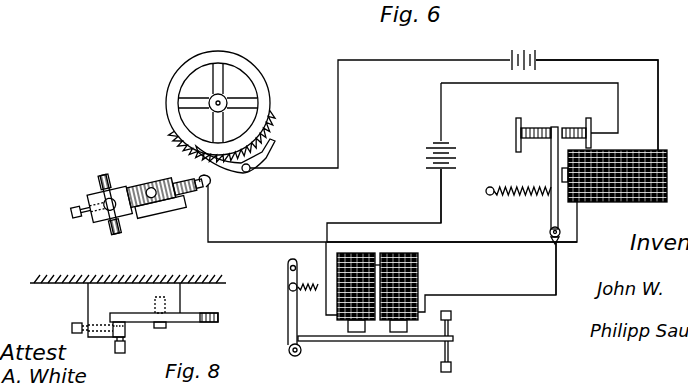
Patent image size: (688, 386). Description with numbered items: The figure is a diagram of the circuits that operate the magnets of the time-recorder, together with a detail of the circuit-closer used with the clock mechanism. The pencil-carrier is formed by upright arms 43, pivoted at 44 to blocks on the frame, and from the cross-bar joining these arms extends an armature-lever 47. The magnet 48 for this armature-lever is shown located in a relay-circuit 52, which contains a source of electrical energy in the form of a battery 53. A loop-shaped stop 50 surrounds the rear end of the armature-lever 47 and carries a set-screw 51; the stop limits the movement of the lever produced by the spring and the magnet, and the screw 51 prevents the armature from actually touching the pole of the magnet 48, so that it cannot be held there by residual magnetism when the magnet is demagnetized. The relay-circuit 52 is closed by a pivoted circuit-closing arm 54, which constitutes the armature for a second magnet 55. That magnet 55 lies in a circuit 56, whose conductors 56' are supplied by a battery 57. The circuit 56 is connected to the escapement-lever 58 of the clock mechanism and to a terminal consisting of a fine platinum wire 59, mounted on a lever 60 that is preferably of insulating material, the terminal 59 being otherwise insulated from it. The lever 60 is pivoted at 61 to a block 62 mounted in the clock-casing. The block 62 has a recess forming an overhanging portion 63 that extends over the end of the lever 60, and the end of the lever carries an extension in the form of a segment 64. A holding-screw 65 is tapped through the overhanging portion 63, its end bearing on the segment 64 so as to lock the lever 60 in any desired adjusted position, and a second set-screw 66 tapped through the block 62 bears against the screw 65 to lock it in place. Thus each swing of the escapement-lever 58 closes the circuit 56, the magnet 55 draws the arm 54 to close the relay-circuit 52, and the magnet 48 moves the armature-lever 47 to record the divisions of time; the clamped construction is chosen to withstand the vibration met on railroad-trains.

In FIG. 6, the upright arms 43 is at (288, 302).
In FIG. 6, the pivot 44 is at (299, 355).
In FIG. 6, the armature-lever 47 is at (390, 341).
In FIG. 6, the magnet 48 is at (418, 278).
In FIG. 6, the stop 50 is at (451, 362).
In FIG. 6, the set-screw 51 is at (451, 318).
In FIG. 6, the relay-circuit 52 is at (441, 213).
In FIG. 6, the battery 53 is at (451, 155).
In FIG. 6, the circuit-closing arm 54 is at (551, 160).
In FIG. 6, the magnet 55 is at (645, 204).
In FIG. 6, the circuit 56 is at (608, 105).
In FIG. 6, the circuit 56' is at (452, 251).
In FIG. 6, the battery 57 is at (537, 55).
In FIG. 6, the escapement-lever 58 is at (270, 152).
In FIG. 6, the platinum wire 59 is at (210, 183).
In FIG. 8, the platinum wire 59 is at (218, 315).
In FIG. 6, the lever 60 is at (180, 173).
In FIG. 8, the lever 60 is at (192, 322).
In FIG. 6, the pivot 61 is at (165, 219).
In FIG. 8, the pivot 61 is at (162, 328).
In FIG. 6, the block 62 is at (148, 179).
In FIG. 8, the block 62 is at (134, 310).
In FIG. 6, the overhanging portion 63 is at (104, 195).
In FIG. 8, the overhanging portion 63 is at (125, 334).
In FIG. 6, the segment 64 is at (115, 203).
In FIG. 6, the holding-screw 65 is at (105, 223).
In FIG. 8, the holding-screw 65 is at (125, 348).
In FIG. 6, the set-screw 66 is at (67, 209).
In FIG. 8, the set-screw 66 is at (72, 328).